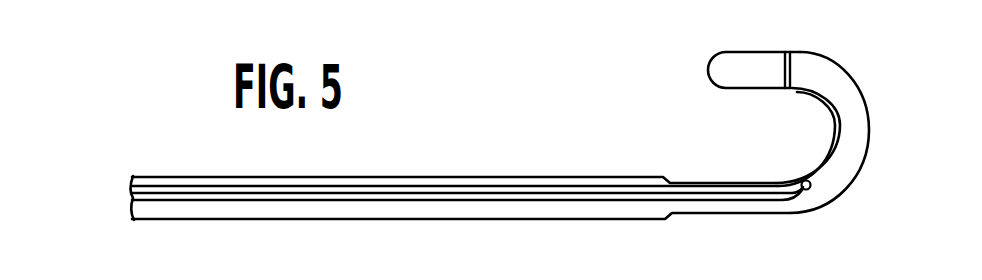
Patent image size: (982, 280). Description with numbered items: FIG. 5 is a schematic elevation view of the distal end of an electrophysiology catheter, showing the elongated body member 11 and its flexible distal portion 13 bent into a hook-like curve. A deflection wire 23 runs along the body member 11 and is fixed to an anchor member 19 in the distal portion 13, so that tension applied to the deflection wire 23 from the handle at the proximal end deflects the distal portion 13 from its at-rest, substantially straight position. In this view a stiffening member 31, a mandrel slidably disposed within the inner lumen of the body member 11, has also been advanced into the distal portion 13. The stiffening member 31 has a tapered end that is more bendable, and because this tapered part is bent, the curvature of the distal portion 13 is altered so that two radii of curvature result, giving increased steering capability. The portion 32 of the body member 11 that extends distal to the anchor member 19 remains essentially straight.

The body member 11 is at (537, 176).
The distal portion 13 is at (869, 128).
The anchor member 19 is at (793, 73).
The deflection wire 23 is at (828, 159).
The stiffening member 31 is at (741, 201).
The portion distal to the anchor member 32 is at (735, 88).